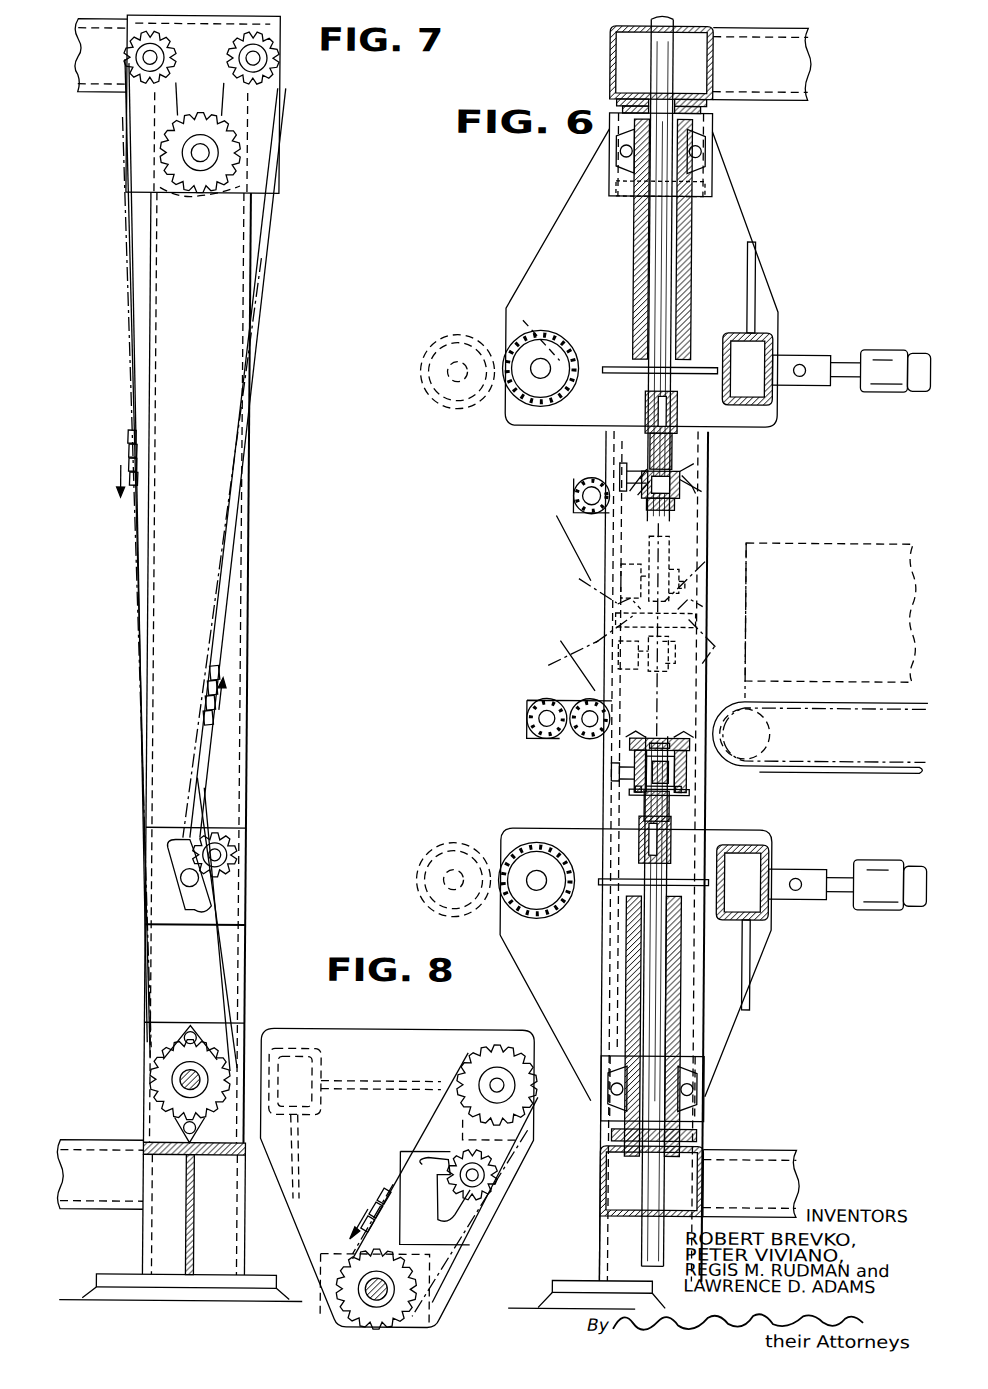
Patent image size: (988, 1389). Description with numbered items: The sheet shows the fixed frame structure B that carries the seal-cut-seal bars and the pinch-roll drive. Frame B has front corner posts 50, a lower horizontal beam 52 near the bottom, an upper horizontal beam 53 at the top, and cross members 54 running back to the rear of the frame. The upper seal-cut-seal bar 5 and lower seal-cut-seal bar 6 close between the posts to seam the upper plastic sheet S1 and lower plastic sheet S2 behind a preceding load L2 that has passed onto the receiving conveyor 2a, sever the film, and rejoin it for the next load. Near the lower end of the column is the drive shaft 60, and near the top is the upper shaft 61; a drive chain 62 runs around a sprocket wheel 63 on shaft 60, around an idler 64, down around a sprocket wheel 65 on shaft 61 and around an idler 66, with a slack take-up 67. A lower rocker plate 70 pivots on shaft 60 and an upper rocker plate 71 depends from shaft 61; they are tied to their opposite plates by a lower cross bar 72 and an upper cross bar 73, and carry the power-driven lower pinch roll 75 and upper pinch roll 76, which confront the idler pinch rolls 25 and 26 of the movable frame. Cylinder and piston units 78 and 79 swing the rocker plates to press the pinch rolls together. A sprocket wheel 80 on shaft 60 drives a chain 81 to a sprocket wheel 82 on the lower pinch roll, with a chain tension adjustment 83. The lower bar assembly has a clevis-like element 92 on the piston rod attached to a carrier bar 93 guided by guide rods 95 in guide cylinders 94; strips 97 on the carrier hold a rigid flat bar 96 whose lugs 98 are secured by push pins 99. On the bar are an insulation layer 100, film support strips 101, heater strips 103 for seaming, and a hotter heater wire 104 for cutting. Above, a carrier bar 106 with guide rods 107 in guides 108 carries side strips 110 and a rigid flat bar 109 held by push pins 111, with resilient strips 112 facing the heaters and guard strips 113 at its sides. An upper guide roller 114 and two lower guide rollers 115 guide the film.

In FIG. 6, the upper seal-cut-seal bar 5 is at (640, 455).
In FIG. 6, the lower seal-cut-seal bar 6 is at (640, 820).
In FIG. 6, the upper idler pinch roll 25 is at (436, 344).
In FIG. 6, the lower idler pinch roll 26 is at (440, 846).
In FIG. 7, the front corner post 50 is at (248, 640).
In FIG. 6, the front corner post 50 is at (702, 540).
In FIG. 6, the lower horizontal beam 52 is at (604, 1178).
In FIG. 6, the upper horizontal beam 53 is at (608, 43).
In FIG. 7, the cross member 54 is at (69, 96).
In FIG. 6, the cross member 54 is at (795, 68).
In FIG. 7, the drive shaft 60 is at (183, 1082).
In FIG. 8, the drive shaft 60 is at (362, 1290).
In FIG. 6, the drive shaft 60 is at (693, 1096).
In FIG. 7, the upper shaft 61 is at (196, 150).
In FIG. 6, the upper shaft 61 is at (700, 160).
In FIG. 7, the drive chain 62 is at (127, 440).
In FIG. 7, the sprocket wheel 63 is at (167, 1062).
In FIG. 7, the idler 64 is at (275, 62).
In FIG. 7, the sprocket wheel 65 is at (204, 196).
In FIG. 7, the idler 66 is at (121, 62).
In FIG. 7, the slack take-up 67 is at (239, 858).
In FIG. 8, the lower rocker plate 70 is at (381, 1042).
In FIG. 6, the lower rocker plate 70 is at (756, 964).
In FIG. 6, the upper rocker plate 71 is at (550, 238).
In FIG. 8, the lower cross bar 72 is at (296, 1050).
In FIG. 6, the lower cross bar 72 is at (758, 844).
In FIG. 6, the upper cross bar 73 is at (770, 340).
In FIG. 6, the lower pinch roll 75 is at (540, 844).
In FIG. 6, the upper pinch roll 76 is at (540, 338).
In FIG. 6, the lower cylinder and piston unit 78 is at (908, 906).
In FIG. 6, the upper cylinder and piston unit 79 is at (910, 390).
In FIG. 8, the sprocket wheel 80 is at (362, 1253).
In FIG. 8, the chain 81 is at (395, 1194).
In FIG. 8, the sprocket wheel 82 is at (525, 1090).
In FIG. 8, the chain tension adjustment 83 is at (466, 1158).
In FIG. 6, the clevis-like element 92 is at (646, 848).
In FIG. 6, the carrier bar 93 is at (670, 808).
In FIG. 6, the guide cylinder 94 is at (630, 984).
In FIG. 6, the guide rod 95 is at (646, 960).
In FIG. 6, the rigid flat bar 96 is at (676, 770).
In FIG. 6, the parallel spaced strips 97 is at (639, 796).
In FIG. 6, the lug 98 is at (624, 770).
In FIG. 6, the push pin 99 is at (620, 775).
In FIG. 6, the heat resistant insulation layer 100 is at (690, 761).
In FIG. 6, the film sheet support strip 101 is at (628, 740).
In FIG. 6, the electric resistance heater strip 103 is at (648, 724).
In FIG. 6, the resistance heater wire 104 is at (658, 738).
In FIG. 6, the upper carrier bar 106 is at (678, 451).
In FIG. 6, the guide rod 107 is at (658, 242).
In FIG. 6, the guide 108 is at (633, 225).
In FIG. 6, the rigid flat bar 109 is at (678, 503).
In FIG. 6, the side strip 110 is at (680, 478).
In FIG. 6, the push pin 111 is at (618, 474).
In FIG. 6, the heat-resistant resilient strip 112 is at (673, 512).
In FIG. 6, the guard strip 113 is at (692, 486).
In FIG. 6, the upper guide roller 114 is at (572, 496).
In FIG. 6, the lower guide roller 115 is at (584, 702).
In FIG. 7, the frame structure B is at (262, 584).
In FIG. 6, the frame structure B is at (600, 80).
In FIG. 6, the upper plastic sheet S1 is at (700, 562).
In FIG. 6, the lower plastic sheet S2 is at (704, 660).
In FIG. 6, the preceding load L2 is at (858, 622).
In FIG. 6, the receiving conveyor 2a is at (862, 770).